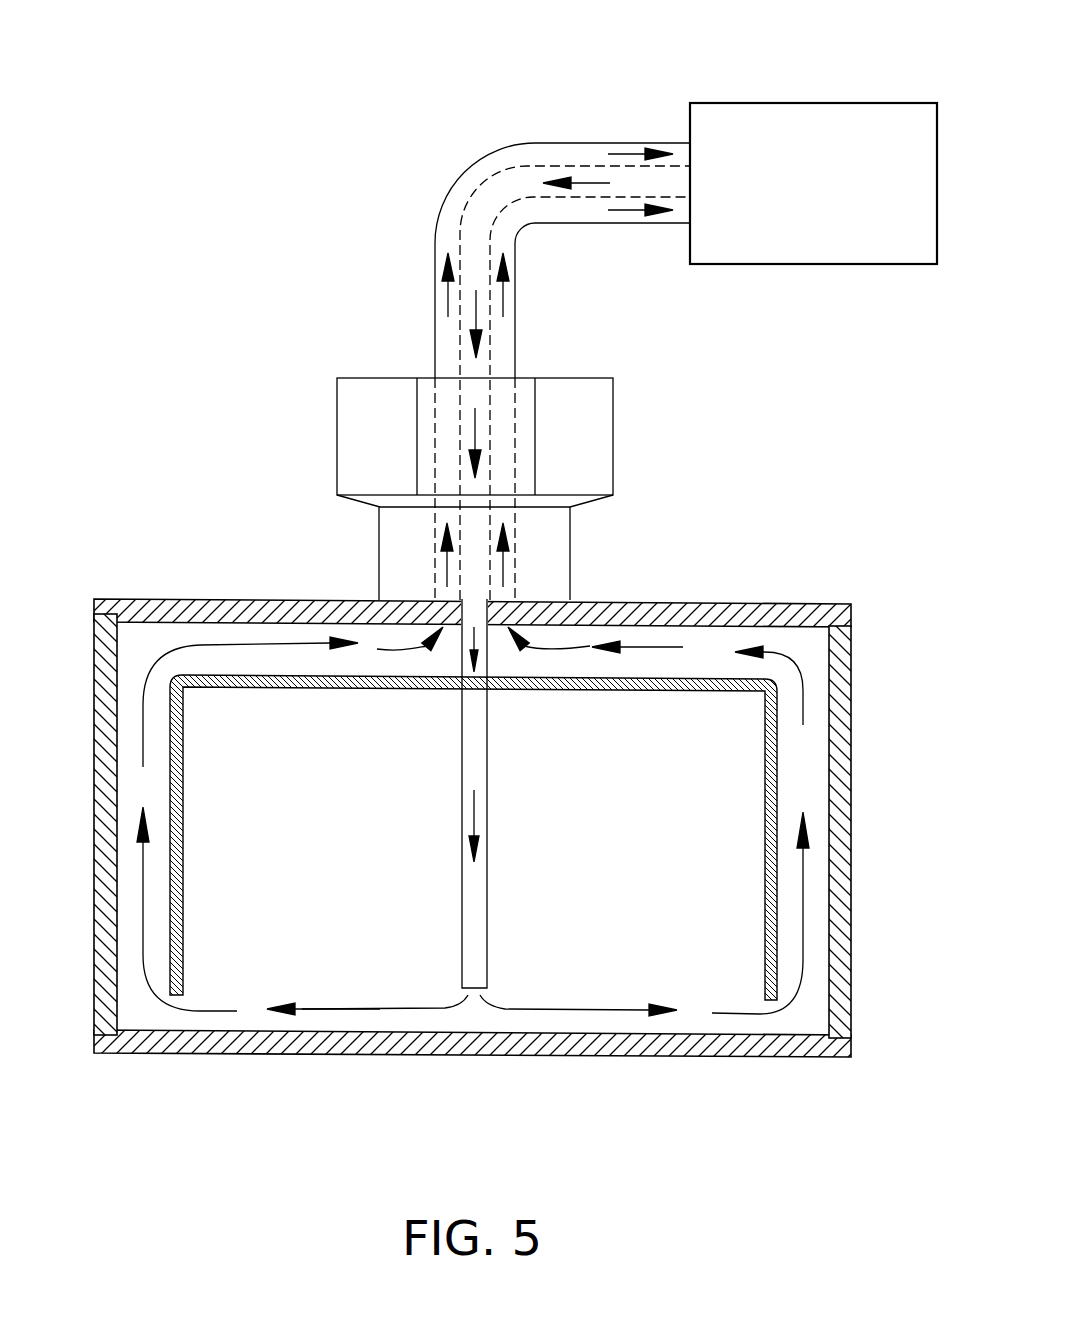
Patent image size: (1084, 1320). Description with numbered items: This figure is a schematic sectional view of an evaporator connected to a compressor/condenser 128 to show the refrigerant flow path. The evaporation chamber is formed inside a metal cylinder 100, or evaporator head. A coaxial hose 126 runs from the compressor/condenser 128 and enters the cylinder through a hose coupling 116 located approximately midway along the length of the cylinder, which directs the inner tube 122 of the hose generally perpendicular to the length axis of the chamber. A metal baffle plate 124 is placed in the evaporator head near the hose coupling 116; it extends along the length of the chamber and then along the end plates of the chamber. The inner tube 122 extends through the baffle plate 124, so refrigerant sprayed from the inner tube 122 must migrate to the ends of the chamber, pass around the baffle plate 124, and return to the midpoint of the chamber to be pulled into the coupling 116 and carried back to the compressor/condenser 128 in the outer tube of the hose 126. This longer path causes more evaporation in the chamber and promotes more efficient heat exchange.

The metal cylinder 100 is at (852, 970).
The hose coupling 116 is at (583, 437).
The inner tube 122 is at (462, 917).
The baffle plate 124 is at (693, 678).
The hose 126 is at (453, 183).
The compressor/condenser 128 is at (800, 103).